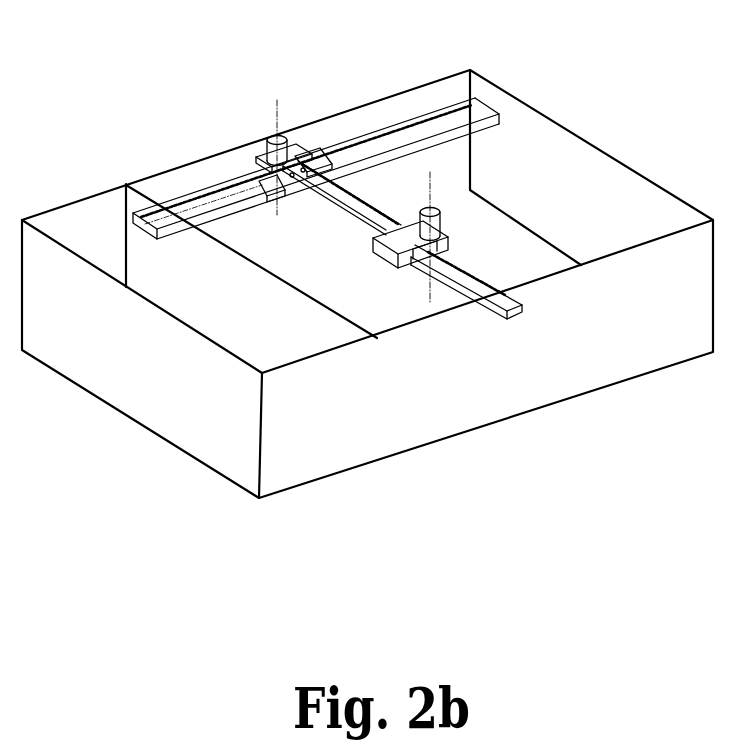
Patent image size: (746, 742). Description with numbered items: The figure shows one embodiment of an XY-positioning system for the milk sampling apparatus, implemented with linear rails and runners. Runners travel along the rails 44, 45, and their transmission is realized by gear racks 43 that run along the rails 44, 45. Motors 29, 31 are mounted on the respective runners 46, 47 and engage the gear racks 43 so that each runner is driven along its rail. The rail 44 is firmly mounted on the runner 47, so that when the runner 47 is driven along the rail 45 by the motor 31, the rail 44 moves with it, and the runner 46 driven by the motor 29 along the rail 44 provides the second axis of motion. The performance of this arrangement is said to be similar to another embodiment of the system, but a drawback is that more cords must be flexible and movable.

The motor 29 is at (262, 138).
The motor 31 is at (432, 215).
The gear rack 43 is at (175, 203).
The rail 44 is at (458, 266).
The rail 45 is at (220, 200).
The runner 46 is at (374, 255).
The runner 47 is at (314, 153).